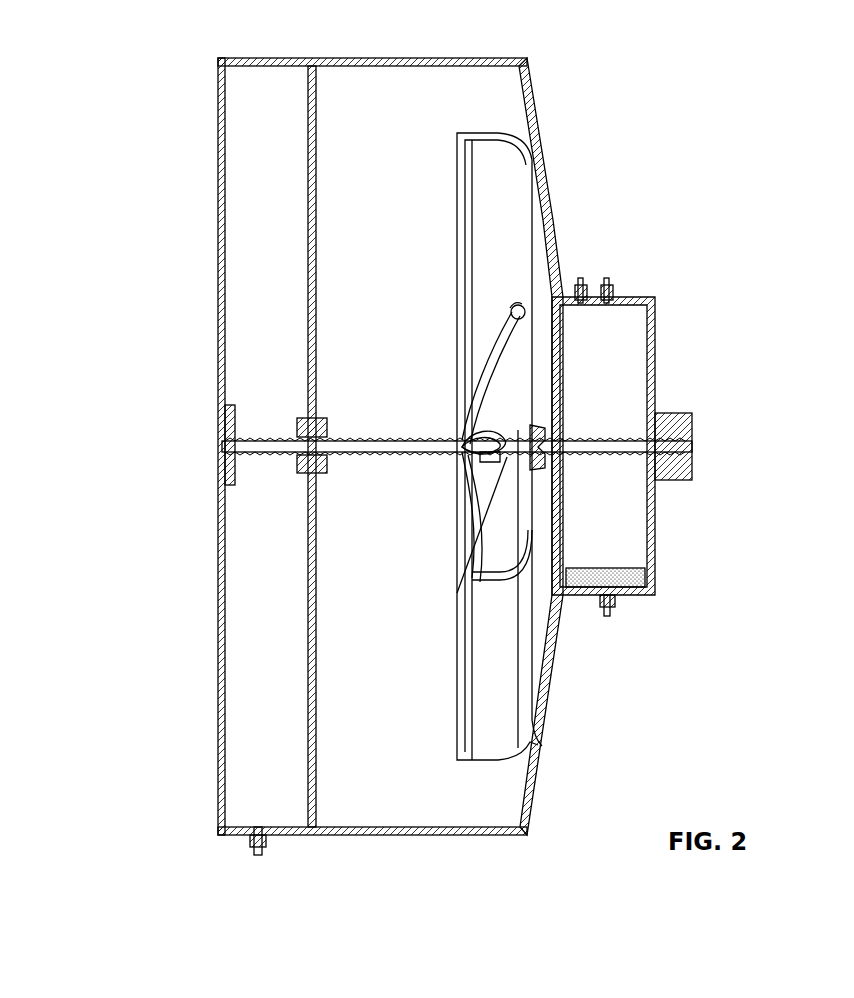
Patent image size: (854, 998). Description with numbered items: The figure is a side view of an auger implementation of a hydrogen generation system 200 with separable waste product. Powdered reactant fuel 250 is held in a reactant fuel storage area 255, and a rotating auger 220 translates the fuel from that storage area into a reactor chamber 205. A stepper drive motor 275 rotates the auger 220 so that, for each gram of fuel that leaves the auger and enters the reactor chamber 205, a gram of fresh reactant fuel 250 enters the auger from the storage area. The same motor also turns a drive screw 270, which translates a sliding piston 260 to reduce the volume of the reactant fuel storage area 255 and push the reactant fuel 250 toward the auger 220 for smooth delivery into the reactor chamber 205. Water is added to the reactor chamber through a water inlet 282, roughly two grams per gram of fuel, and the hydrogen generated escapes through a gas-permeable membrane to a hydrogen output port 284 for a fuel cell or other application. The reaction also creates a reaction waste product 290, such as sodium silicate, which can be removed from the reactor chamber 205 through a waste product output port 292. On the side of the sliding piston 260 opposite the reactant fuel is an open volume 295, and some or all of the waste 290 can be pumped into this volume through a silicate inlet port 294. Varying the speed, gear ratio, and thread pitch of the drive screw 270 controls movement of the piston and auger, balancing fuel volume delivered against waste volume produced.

The system 200 is at (212, 46).
The reactor chamber 205 is at (624, 530).
The auger 220 is at (514, 365).
The reactant fuel 250 is at (412, 712).
The reactant fuel storage area 255 is at (424, 113).
The sliding piston 260 is at (296, 115).
The drive screw 270 is at (214, 447).
The stepper drive motor 275 is at (706, 446).
The water inlet 282 is at (580, 277).
The hydrogen output port 284 is at (613, 295).
The reaction waste product 290 is at (640, 578).
The waste product output port 292 is at (615, 608).
The silicate inlet port 294 is at (252, 843).
The open volume 295 is at (242, 657).